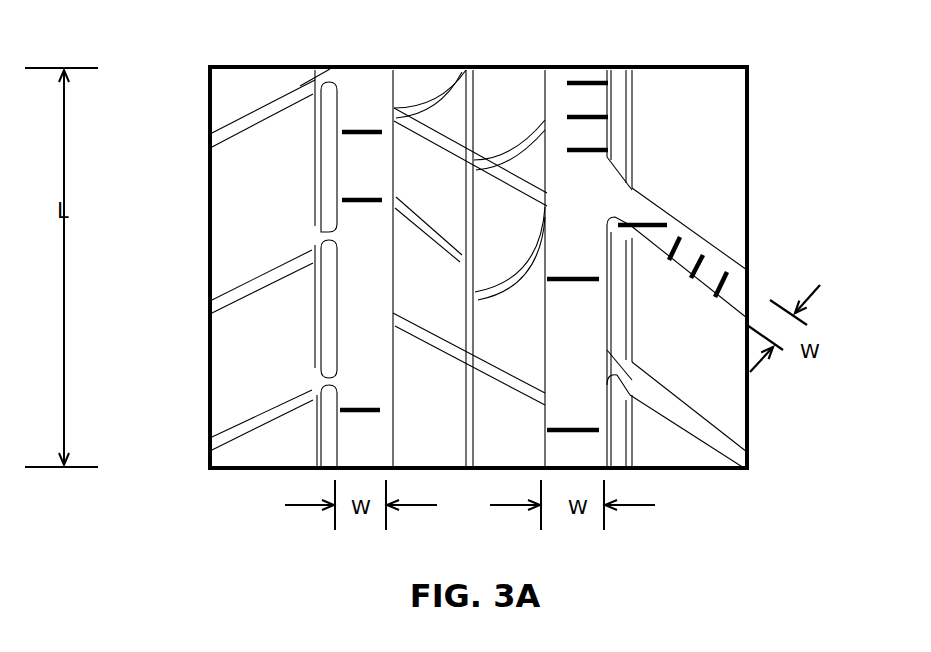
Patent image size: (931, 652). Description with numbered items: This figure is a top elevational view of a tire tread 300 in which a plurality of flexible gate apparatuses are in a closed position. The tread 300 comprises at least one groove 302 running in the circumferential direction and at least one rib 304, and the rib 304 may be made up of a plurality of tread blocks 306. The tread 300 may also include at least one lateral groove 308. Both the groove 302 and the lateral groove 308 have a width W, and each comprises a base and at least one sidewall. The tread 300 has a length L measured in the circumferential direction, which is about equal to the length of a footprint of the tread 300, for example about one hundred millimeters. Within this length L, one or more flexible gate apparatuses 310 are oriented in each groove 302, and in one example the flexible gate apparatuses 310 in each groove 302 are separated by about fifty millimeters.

The tread 300 is at (144, 38).
The groove 302 is at (360, 82).
The rib 304 is at (264, 82).
The tread block 306 is at (705, 137).
The lateral groove 308 is at (735, 285).
The flexible gate apparatus 310 is at (339, 153).